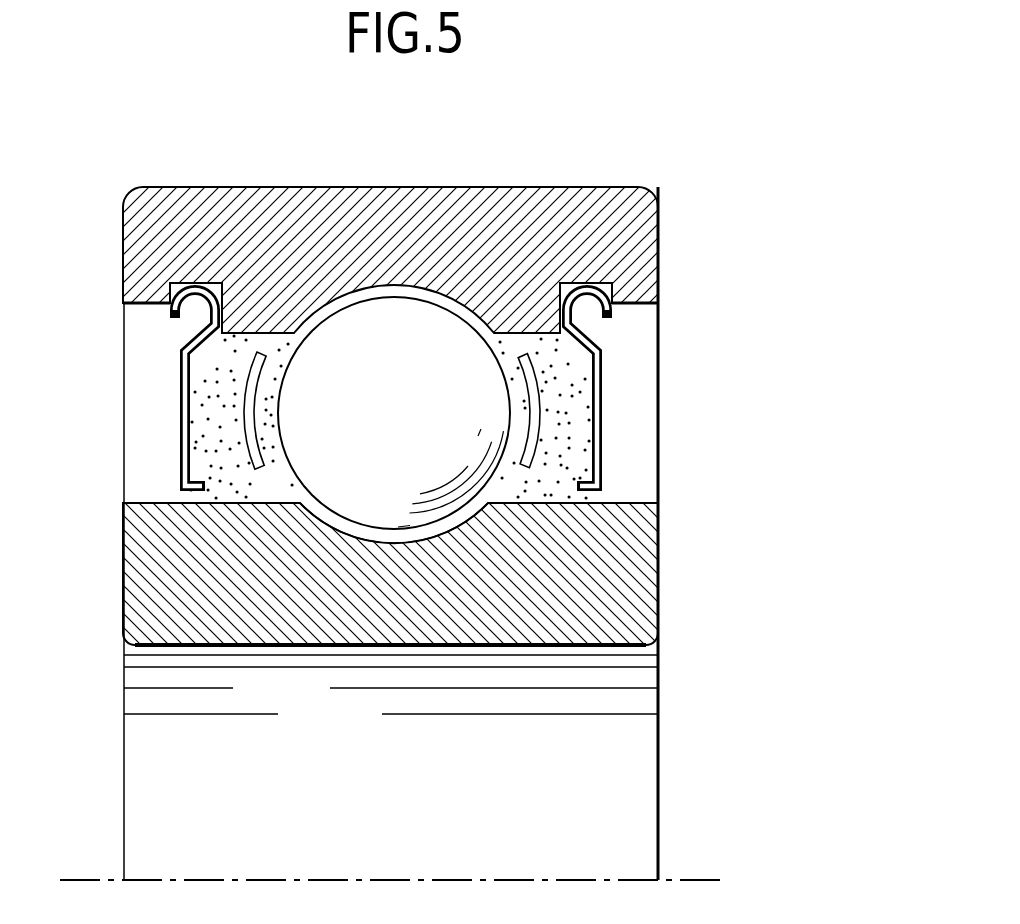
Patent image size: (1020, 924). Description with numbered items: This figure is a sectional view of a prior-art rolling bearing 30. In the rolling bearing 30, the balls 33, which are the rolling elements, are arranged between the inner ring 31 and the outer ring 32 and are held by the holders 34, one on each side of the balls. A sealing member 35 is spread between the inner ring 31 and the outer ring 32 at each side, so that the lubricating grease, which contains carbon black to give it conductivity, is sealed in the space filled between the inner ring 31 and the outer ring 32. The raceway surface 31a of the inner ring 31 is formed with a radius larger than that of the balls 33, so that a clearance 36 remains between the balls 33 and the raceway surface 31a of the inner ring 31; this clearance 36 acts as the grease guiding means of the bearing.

The rolling bearing 30 is at (399, 362).
The inner ring 31 is at (658, 598).
The raceway surface 31a is at (486, 504).
The outer ring 32 is at (658, 212).
The balls 33 is at (502, 383).
The holders 34 is at (247, 415).
The sealing member 35 is at (183, 390).
The clearance 36 is at (298, 505).